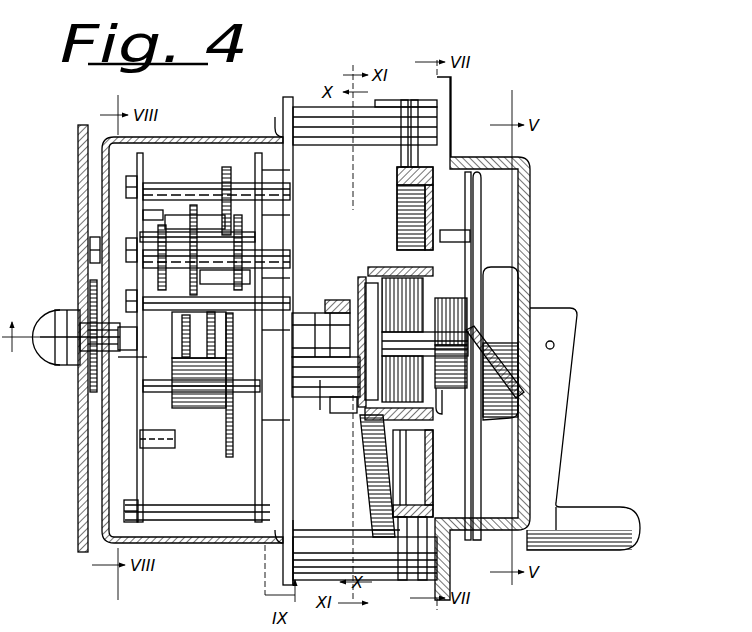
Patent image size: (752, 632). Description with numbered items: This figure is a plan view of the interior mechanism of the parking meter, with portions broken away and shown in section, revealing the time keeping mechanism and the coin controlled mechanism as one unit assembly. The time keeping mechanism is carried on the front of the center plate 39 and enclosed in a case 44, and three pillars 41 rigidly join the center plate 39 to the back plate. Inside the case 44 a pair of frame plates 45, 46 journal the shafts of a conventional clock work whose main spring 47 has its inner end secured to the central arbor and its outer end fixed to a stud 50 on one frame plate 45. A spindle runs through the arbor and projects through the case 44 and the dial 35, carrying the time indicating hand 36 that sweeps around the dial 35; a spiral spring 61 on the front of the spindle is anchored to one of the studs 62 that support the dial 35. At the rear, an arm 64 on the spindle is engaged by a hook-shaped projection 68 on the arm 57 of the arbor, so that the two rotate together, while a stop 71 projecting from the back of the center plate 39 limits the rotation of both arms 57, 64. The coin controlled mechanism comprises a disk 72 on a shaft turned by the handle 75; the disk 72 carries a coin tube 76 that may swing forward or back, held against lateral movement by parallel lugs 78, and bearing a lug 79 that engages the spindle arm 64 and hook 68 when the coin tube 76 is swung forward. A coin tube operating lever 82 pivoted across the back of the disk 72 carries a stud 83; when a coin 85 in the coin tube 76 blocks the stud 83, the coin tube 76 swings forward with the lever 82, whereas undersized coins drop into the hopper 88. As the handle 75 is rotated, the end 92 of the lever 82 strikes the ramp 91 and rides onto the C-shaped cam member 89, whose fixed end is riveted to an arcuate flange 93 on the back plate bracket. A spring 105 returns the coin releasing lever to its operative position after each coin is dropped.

The dial 35 is at (78, 485).
The time indicating hand 36 is at (72, 312).
The center plate 39 is at (290, 522).
The pillars 41 is at (302, 128).
The case 44 is at (242, 543).
The frame plate 45 is at (135, 500).
The frame plate 46 is at (258, 503).
The main spring 47 is at (155, 418).
The stud 50 is at (175, 437).
The arm 57 is at (300, 350).
The spiral spring 61 is at (90, 382).
The studs 62 is at (97, 240).
The arm 64 is at (352, 300).
The hook-shaped projection 68 is at (325, 320).
The stop 71 is at (320, 410).
The disk 72 is at (452, 470).
The handle 75 is at (552, 437).
The coin tube 76 is at (375, 270).
The lugs 78 is at (380, 275).
The lug 79 is at (355, 402).
The coin tube operating lever 82 is at (440, 430).
The stud 83 is at (418, 340).
The coin 85 is at (368, 420).
The hopper 88 is at (385, 183).
The C-shaped cam member 89 is at (470, 255).
The ramp 91 is at (505, 378).
The end of coin tube operating lever 92 is at (470, 322).
The arcuate flange 93 is at (440, 238).
The spring 105 is at (372, 497).